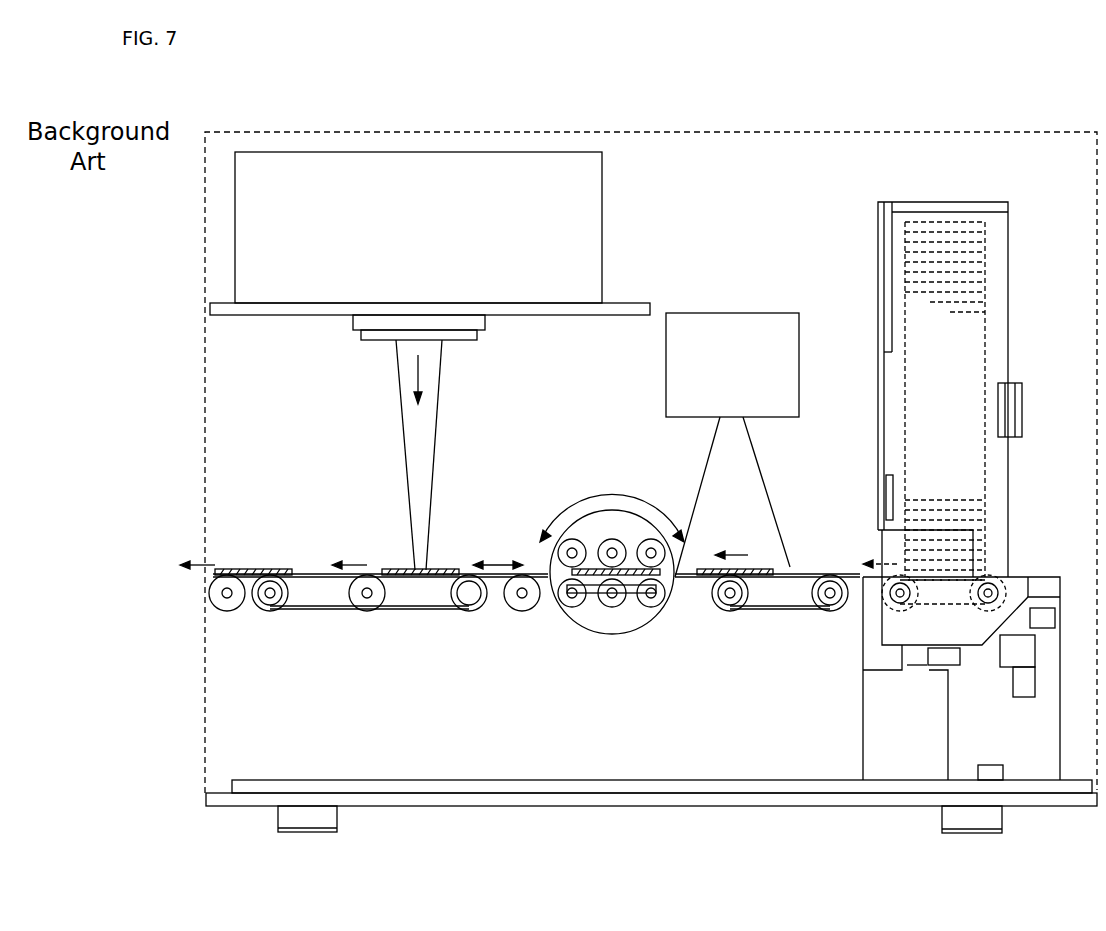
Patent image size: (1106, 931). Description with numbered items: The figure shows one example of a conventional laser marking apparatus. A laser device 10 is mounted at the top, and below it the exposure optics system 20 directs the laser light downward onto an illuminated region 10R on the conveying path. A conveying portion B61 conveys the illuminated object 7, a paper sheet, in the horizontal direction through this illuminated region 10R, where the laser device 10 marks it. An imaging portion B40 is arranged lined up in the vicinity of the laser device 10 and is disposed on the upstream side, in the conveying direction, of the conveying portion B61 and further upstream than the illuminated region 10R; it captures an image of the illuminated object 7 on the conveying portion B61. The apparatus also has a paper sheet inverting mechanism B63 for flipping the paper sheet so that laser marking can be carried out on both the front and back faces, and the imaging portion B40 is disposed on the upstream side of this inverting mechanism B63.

The laser device 10 is at (603, 195).
The exposure optics system 20 is at (470, 343).
The illuminated region 10R is at (381, 525).
The conveying portion B61 is at (510, 511).
The paper sheet inverting mechanism B63 is at (625, 511).
The imaging portion B40 is at (758, 313).
The illuminated object 7 is at (437, 569).